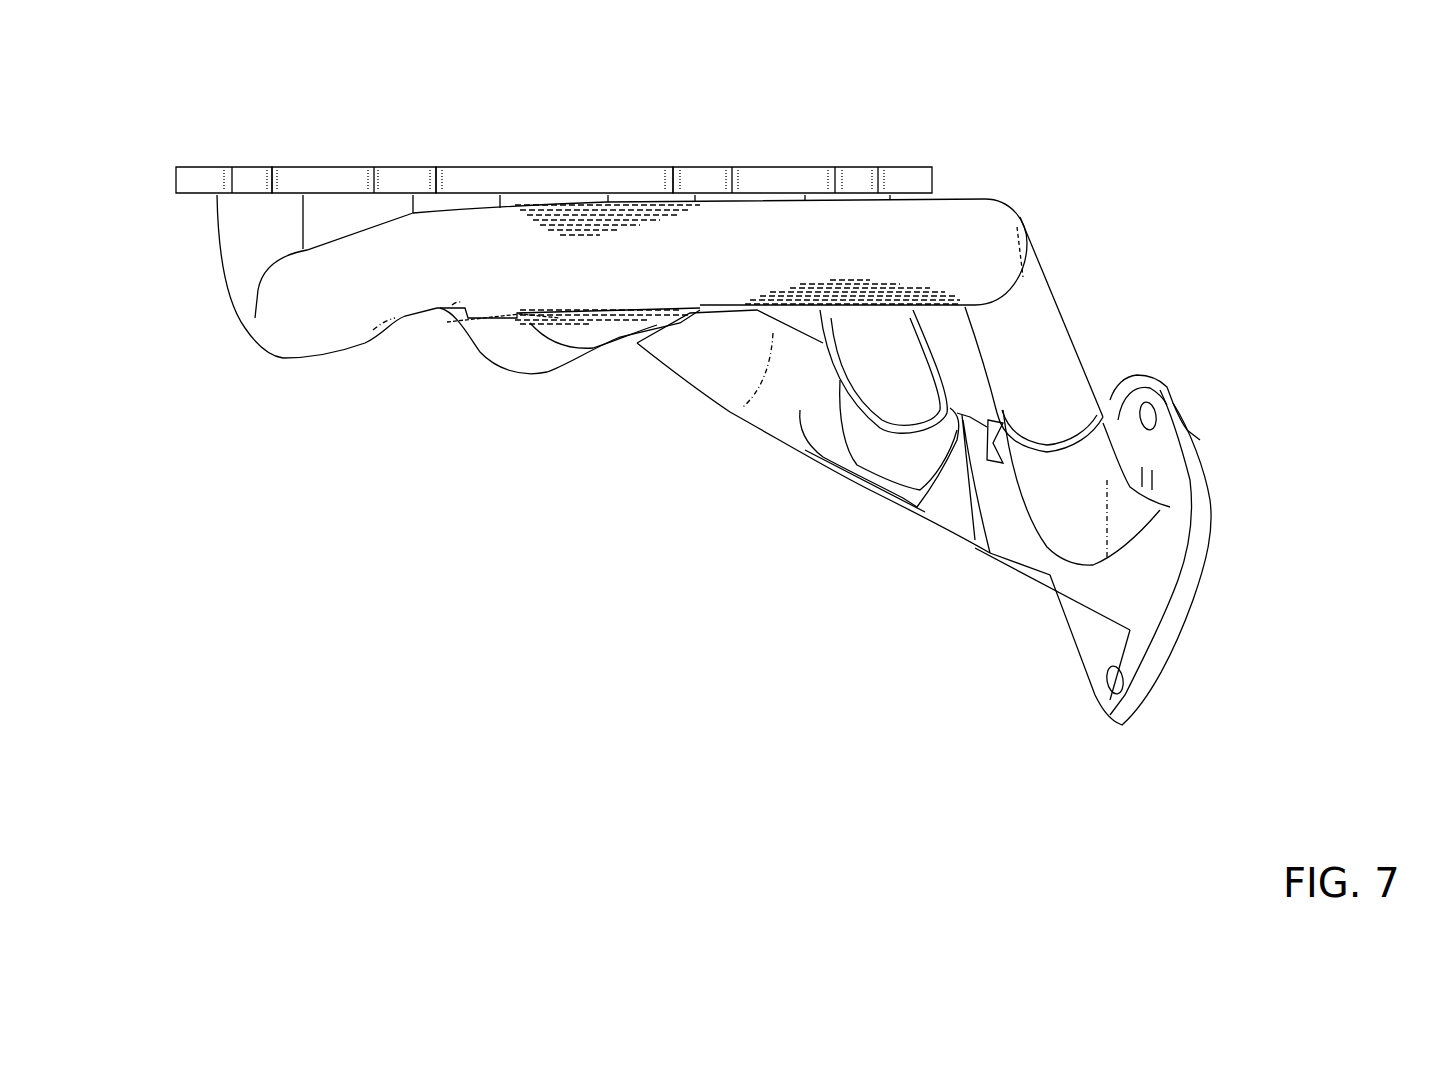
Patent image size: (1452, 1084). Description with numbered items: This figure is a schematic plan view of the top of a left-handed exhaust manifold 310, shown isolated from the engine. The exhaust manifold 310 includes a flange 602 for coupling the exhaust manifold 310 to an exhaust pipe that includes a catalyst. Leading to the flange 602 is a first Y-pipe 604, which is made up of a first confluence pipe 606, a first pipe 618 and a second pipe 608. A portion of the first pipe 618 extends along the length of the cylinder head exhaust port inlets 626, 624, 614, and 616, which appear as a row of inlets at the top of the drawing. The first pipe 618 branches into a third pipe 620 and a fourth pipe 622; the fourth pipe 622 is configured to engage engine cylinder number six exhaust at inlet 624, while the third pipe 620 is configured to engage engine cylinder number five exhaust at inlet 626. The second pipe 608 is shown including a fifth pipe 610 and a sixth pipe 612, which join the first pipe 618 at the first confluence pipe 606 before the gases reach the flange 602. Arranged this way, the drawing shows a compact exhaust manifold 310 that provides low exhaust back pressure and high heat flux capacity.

The cylinder head exhaust port inlet 626 is at (263, 165).
The cylinder head exhaust port inlet 624 is at (450, 165).
The cylinder head exhaust port inlet 614 is at (647, 165).
The cylinder head exhaust port inlet 616 is at (862, 165).
The first pipe 618 is at (1050, 283).
The fifth pipe 610 is at (917, 322).
The exhaust manifold 310 is at (1113, 425).
The third pipe 620 is at (283, 357).
The fourth pipe 622 is at (507, 363).
The sixth pipe 612 is at (653, 367).
The second pipe 608 is at (930, 523).
The first confluence pipe 606 is at (1040, 557).
The first Y-pipe 604 is at (1053, 605).
The flange 602 is at (1088, 675).